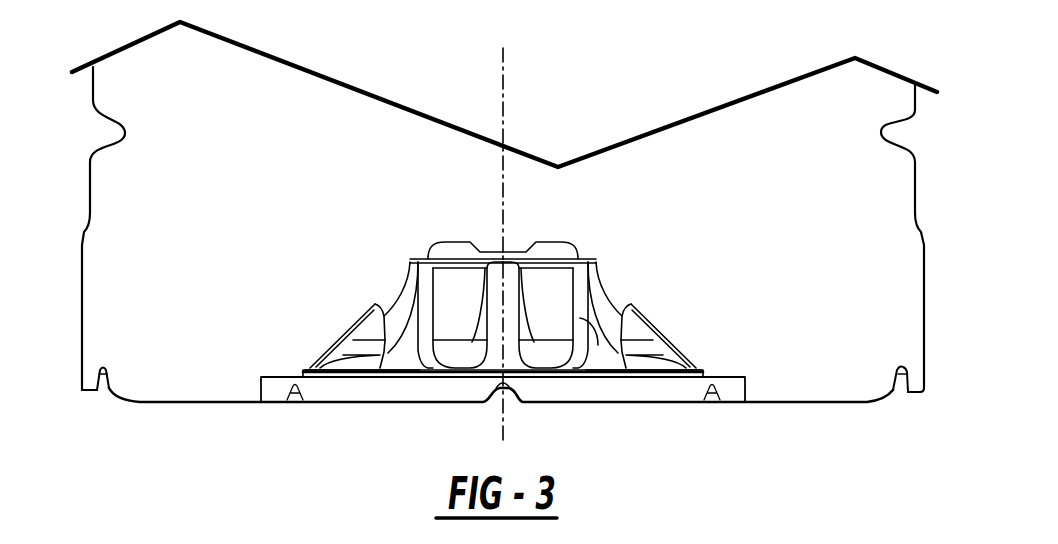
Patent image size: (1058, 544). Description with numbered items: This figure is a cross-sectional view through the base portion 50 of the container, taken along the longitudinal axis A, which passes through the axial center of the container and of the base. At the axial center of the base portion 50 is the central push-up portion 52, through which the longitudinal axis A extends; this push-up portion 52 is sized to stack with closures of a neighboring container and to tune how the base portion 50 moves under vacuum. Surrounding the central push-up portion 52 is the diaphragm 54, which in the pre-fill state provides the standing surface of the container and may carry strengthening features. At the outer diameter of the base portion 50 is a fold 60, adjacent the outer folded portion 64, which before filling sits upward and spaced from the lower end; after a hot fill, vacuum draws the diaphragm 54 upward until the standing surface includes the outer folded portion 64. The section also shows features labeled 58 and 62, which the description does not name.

The longitudinal axis A is at (503, 110).
The base portion 50 is at (802, 436).
The central push-up portion 52 is at (520, 250).
The diaphragm 54 is at (237, 404).
The rib 58 is at (580, 318).
The fold 60 is at (109, 405).
The side wall 62 is at (101, 366).
The outer folded portion 64 is at (82, 390).